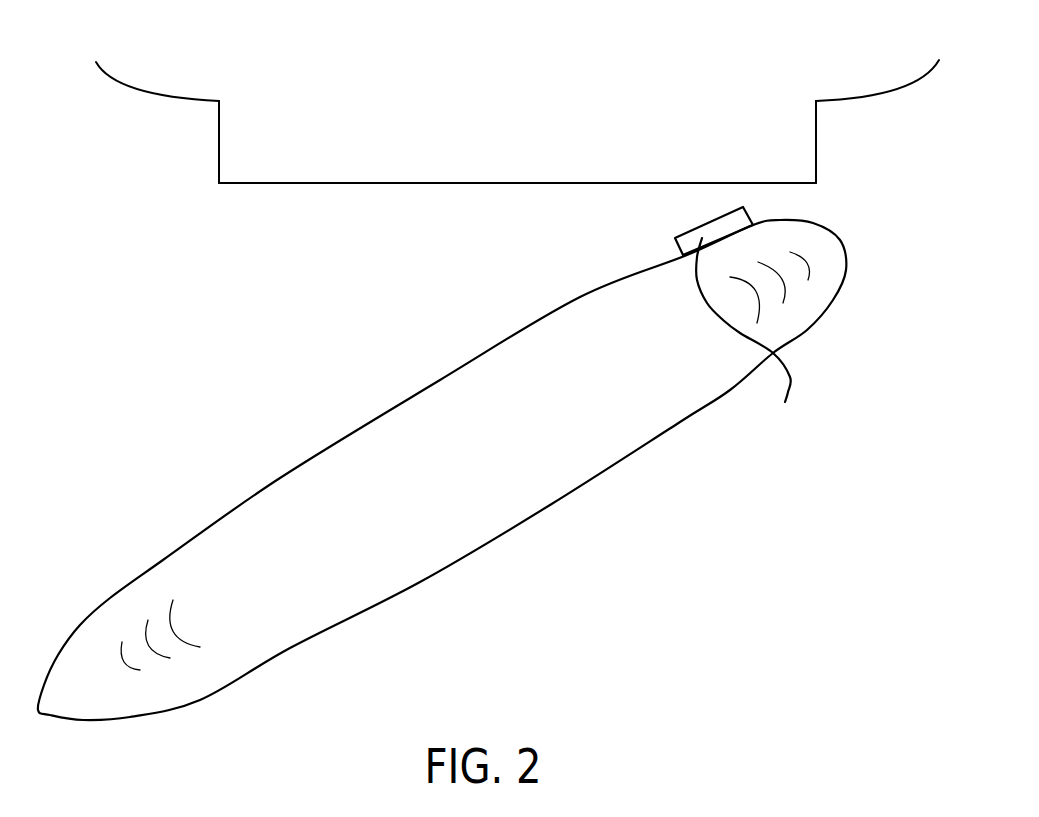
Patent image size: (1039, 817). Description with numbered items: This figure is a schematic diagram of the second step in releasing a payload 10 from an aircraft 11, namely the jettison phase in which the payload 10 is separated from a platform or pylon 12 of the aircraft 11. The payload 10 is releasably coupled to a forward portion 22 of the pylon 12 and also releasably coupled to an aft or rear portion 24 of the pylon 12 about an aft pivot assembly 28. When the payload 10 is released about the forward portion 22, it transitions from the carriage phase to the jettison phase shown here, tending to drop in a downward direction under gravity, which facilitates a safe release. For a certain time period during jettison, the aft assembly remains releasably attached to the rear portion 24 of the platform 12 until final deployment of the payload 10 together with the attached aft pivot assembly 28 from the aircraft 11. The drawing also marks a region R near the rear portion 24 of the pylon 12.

The payload 10 is at (555, 516).
The aircraft 11 is at (726, 64).
The pylon 12 is at (509, 150).
The forward portion 22 is at (291, 208).
The aft or rear portion 24 is at (665, 215).
The aft pivot assembly 28 is at (752, 336).
The region R is at (843, 186).